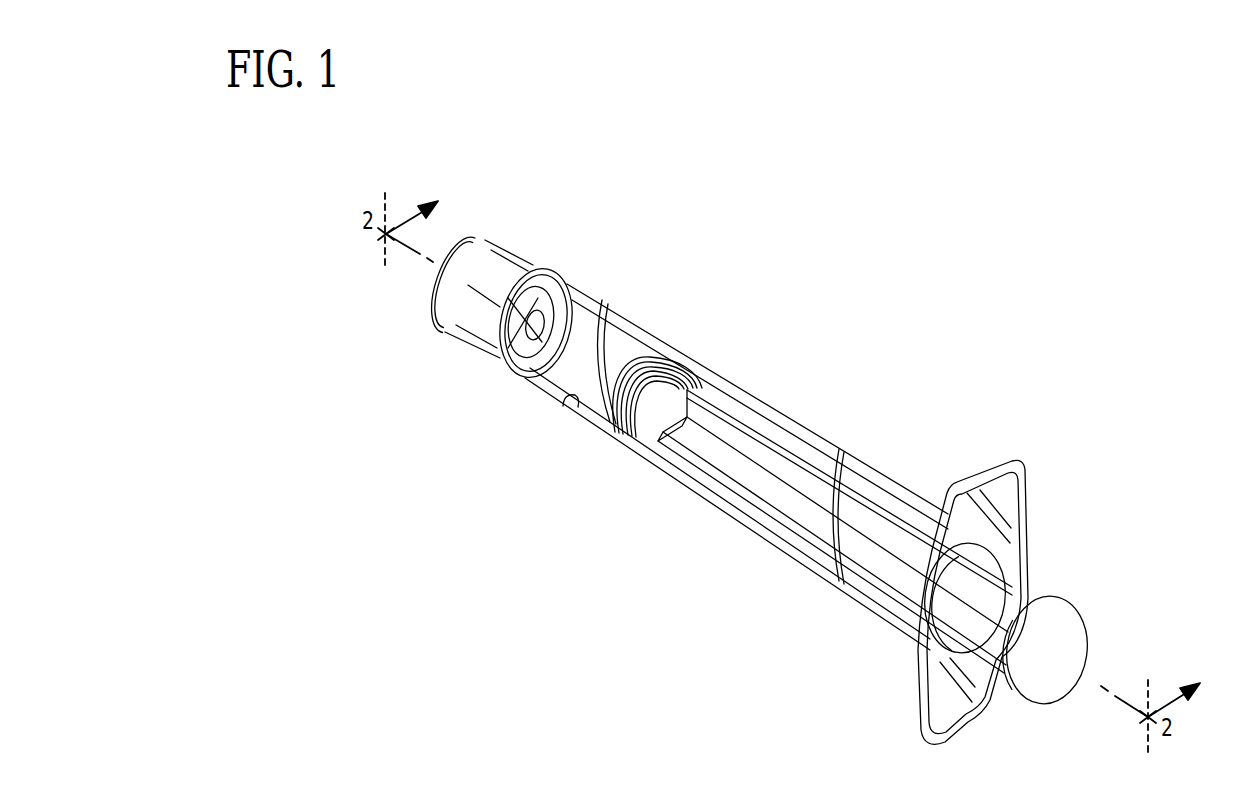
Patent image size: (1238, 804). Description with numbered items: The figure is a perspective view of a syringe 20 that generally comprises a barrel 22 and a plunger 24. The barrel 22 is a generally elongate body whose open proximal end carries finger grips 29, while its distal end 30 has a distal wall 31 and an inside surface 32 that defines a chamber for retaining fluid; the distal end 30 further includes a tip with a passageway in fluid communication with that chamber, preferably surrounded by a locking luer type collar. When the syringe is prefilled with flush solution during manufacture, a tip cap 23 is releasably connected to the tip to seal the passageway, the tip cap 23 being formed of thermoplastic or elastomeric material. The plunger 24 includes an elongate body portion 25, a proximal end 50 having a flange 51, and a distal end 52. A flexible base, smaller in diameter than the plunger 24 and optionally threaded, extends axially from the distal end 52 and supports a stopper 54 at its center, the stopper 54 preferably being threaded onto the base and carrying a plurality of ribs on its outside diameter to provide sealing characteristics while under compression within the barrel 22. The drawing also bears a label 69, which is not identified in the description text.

The syringe 20 is at (530, 634).
The barrel 22 is at (704, 493).
The tip cap 23 is at (423, 327).
The plunger 24 is at (787, 467).
The elongate body portion 25 is at (812, 500).
The finger grips 29 is at (994, 463).
The distal end 30 is at (506, 374).
The distal wall 31 is at (572, 303).
The inside surface 32 is at (570, 403).
The proximal end 50 is at (1013, 563).
The flange 51 is at (1070, 617).
The distal end 52 is at (718, 401).
The stopper 54 is at (666, 358).
The sealing ribs 69 is at (627, 356).